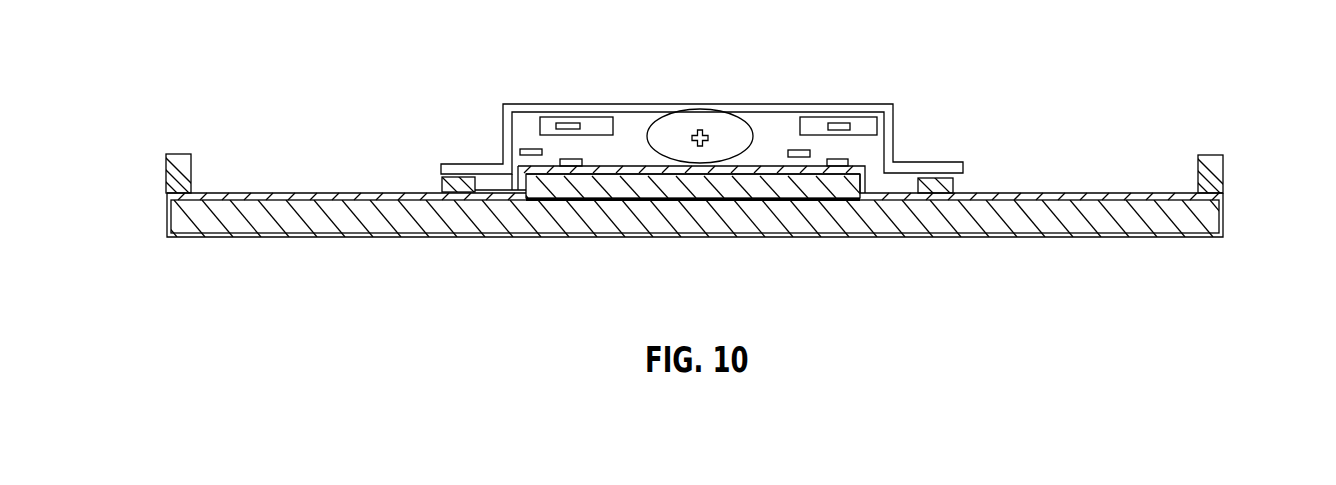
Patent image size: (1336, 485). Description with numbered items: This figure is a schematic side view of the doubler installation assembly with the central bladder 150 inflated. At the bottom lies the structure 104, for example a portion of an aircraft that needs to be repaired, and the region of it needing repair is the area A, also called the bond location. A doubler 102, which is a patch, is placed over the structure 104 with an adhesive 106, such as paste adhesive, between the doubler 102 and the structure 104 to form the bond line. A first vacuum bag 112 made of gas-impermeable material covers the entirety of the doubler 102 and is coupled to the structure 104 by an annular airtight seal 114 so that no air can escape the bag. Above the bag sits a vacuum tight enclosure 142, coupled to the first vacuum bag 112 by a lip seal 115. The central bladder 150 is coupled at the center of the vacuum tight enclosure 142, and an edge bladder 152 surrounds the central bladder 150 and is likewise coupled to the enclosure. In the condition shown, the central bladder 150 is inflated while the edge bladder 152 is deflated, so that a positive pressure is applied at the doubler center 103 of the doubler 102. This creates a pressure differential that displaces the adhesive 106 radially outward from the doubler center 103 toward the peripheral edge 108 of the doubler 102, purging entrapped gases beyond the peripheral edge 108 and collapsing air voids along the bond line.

The doubler 102 is at (580, 188).
The doubler center 103 is at (693, 185).
The structure 104 is at (1215, 208).
The adhesive 106 is at (788, 202).
The peripheral edge 108 is at (512, 186).
The first vacuum bag 112 is at (244, 195).
The annular airtight seal 114 is at (178, 152).
The lip seal 115 is at (953, 180).
The vacuum tight enclosure 142 is at (786, 110).
The central bladder 150 is at (677, 124).
The edge bladder 152 is at (596, 124).
The area A is at (627, 214).